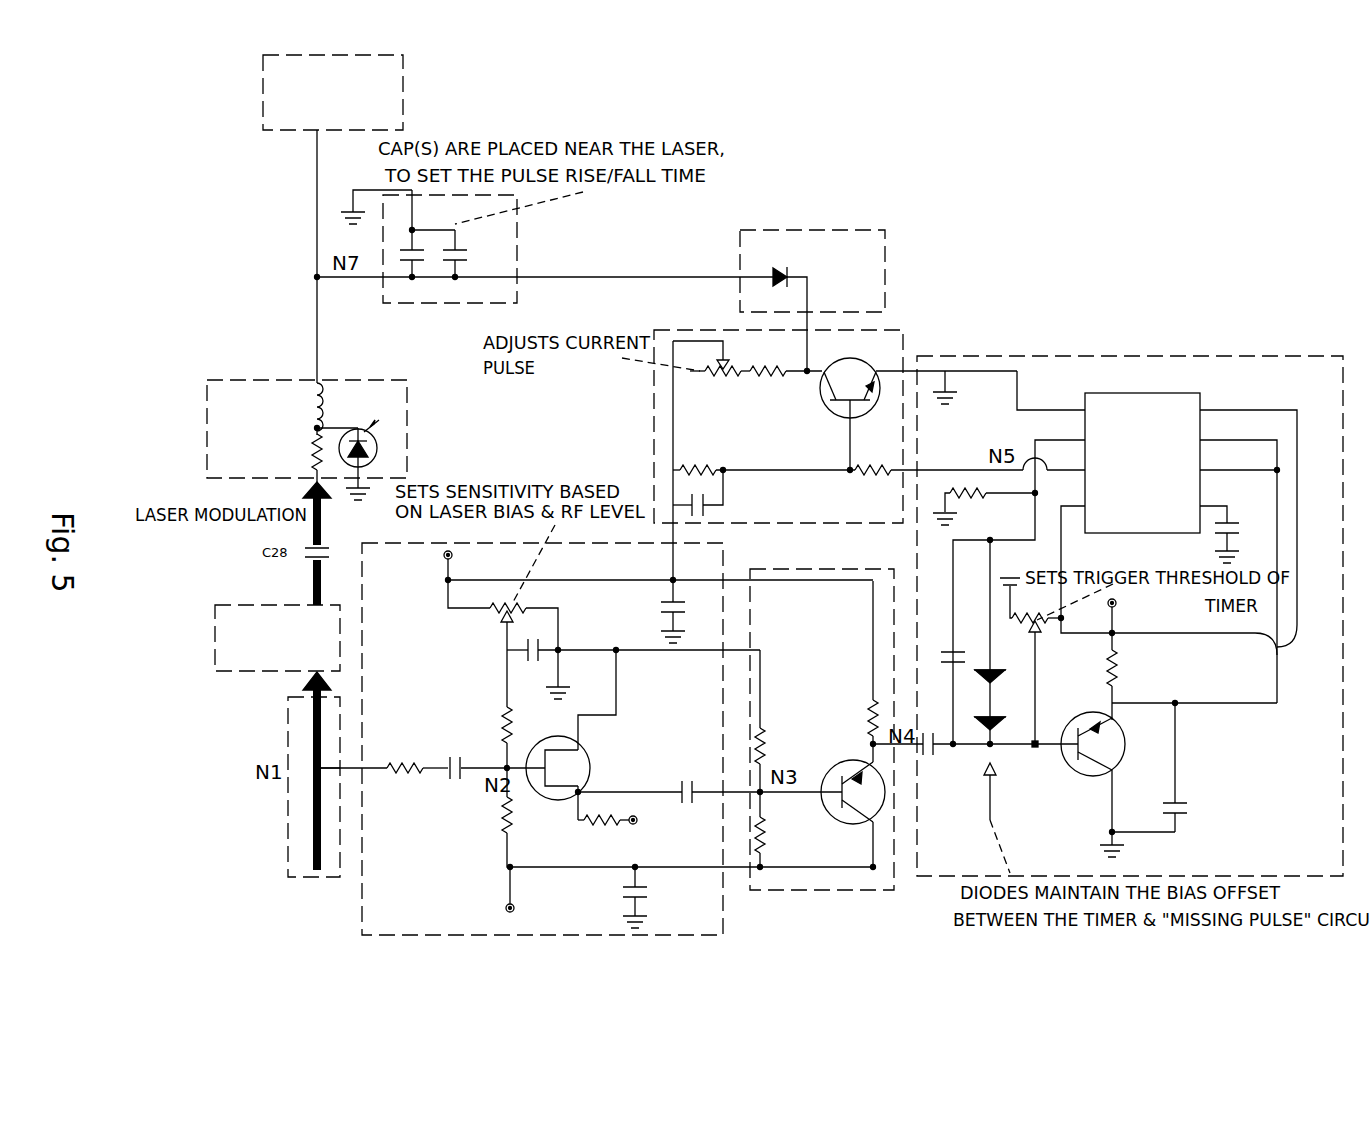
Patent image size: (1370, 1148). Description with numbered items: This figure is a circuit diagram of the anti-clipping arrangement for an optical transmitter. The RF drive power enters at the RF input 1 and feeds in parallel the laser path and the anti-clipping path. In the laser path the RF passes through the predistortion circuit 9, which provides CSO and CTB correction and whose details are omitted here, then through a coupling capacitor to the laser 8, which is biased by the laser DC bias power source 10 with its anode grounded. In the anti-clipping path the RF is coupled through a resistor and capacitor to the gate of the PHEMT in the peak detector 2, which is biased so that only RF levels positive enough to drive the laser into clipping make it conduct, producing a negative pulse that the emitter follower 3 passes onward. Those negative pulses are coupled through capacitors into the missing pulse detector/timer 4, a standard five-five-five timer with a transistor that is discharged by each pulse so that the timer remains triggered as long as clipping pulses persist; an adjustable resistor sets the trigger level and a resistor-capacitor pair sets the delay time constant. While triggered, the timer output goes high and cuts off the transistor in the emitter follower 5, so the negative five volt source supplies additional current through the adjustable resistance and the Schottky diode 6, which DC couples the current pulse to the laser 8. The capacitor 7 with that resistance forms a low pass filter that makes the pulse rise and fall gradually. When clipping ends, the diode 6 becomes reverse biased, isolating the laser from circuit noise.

The RF input 1 is at (314, 784).
The PHEMT peak detector 2 is at (595, 737).
The emitter follower 3 is at (793, 729).
The missing pulse detector/timer 4 is at (1108, 616).
The emitter follower 5 is at (869, 455).
The Schottky diode 6 is at (812, 300).
The capacitor 7 is at (429, 246).
The laser 8 is at (307, 440).
The predistortion circuits 9 is at (277, 639).
The laser DC bias power source 10 is at (333, 92).